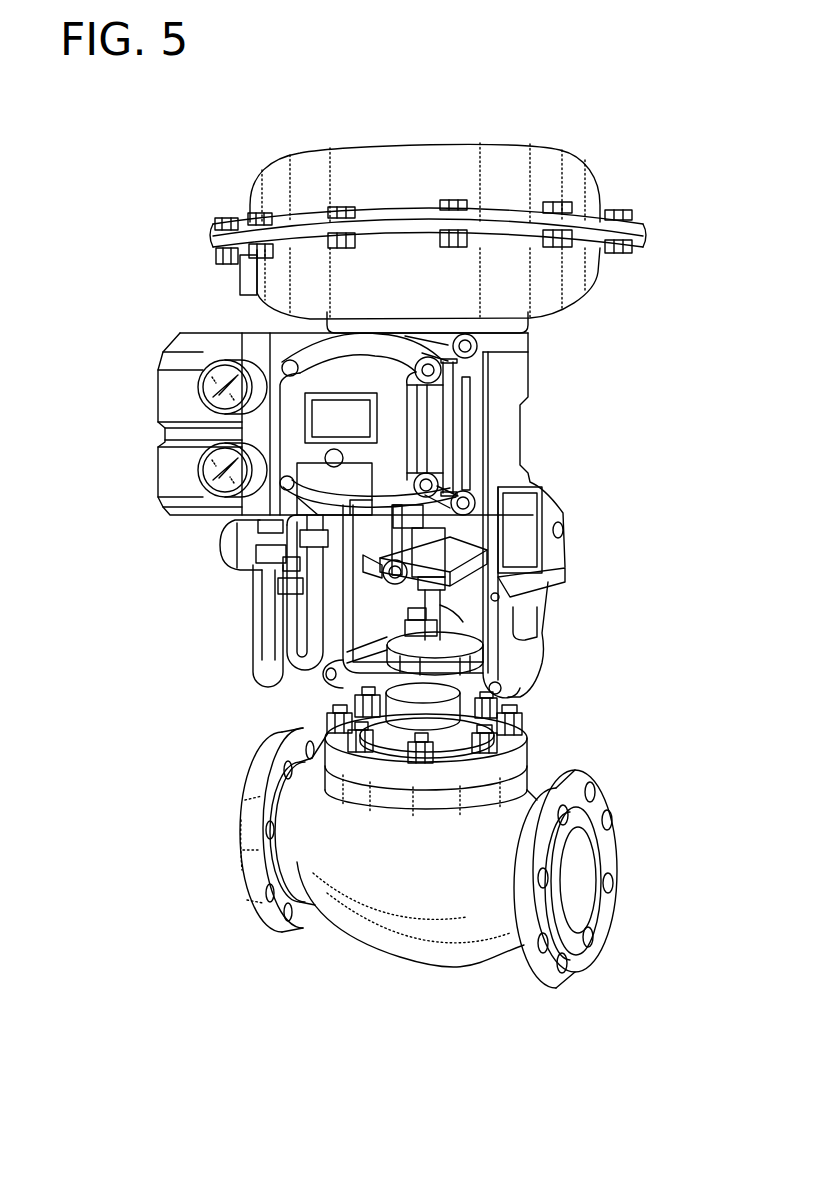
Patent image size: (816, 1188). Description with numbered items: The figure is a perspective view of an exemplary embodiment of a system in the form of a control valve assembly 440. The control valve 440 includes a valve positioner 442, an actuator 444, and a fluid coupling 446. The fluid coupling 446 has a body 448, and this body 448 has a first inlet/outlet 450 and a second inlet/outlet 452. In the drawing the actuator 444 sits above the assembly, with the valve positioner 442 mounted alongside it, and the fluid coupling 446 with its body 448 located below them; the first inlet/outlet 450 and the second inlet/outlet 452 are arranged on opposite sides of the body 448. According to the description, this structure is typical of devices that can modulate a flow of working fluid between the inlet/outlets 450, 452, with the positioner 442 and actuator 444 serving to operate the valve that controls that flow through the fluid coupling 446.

The control valve assembly 440 is at (548, 103).
The valve positioner 442 is at (155, 433).
The actuator 444 is at (580, 312).
The fluid coupling 446 is at (385, 960).
The body 448 is at (325, 928).
The first inlet/outlet 450 is at (225, 853).
The second inlet/outlet 452 is at (612, 942).